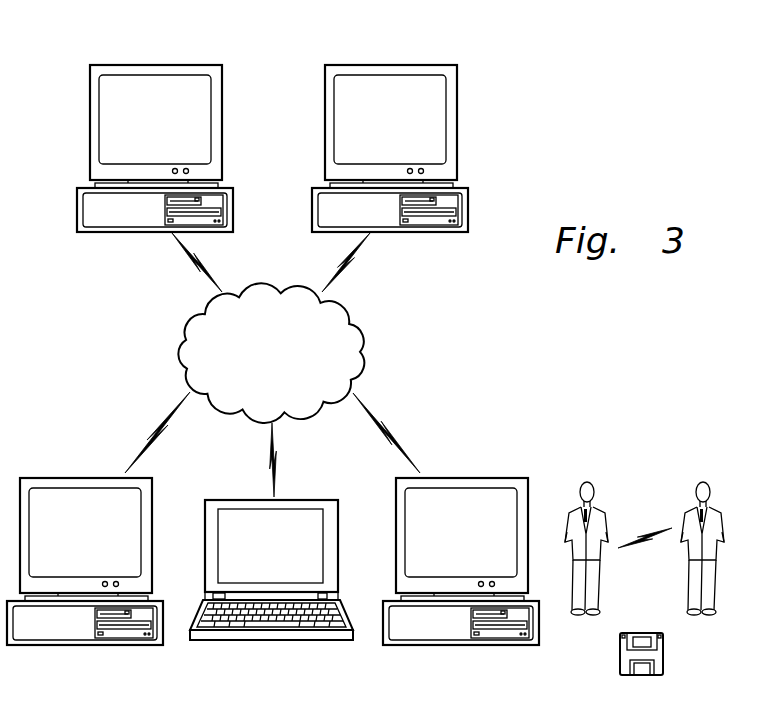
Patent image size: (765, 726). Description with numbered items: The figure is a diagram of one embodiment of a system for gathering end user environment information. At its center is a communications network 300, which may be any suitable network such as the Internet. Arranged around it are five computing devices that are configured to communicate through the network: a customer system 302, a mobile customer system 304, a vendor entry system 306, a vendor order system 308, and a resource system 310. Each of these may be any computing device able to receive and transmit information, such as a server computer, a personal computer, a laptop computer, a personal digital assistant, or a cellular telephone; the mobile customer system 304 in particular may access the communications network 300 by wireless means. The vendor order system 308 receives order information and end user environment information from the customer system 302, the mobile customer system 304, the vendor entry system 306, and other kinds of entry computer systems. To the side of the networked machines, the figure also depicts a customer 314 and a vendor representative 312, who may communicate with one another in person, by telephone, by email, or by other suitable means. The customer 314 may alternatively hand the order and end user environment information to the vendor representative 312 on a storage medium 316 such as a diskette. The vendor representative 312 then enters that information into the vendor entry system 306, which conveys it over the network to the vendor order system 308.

The communications network 300 is at (178, 354).
The customer system 302 is at (53, 478).
The mobile customer system 304 is at (237, 500).
The vendor entry system 306 is at (458, 478).
The vendor order system 308 is at (88, 125).
The resource system 310 is at (457, 123).
The vendor representative 312 is at (585, 482).
The customer 314 is at (701, 482).
The storage medium 316 is at (664, 655).